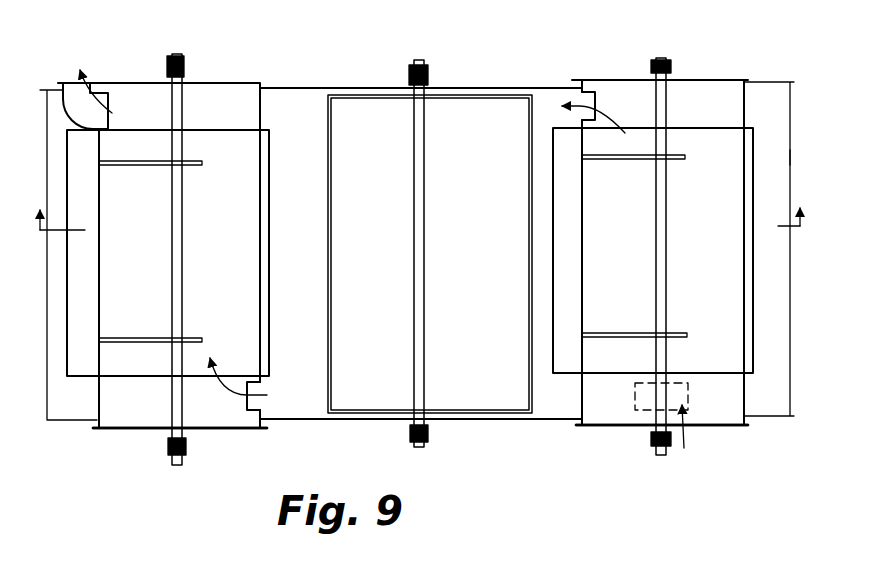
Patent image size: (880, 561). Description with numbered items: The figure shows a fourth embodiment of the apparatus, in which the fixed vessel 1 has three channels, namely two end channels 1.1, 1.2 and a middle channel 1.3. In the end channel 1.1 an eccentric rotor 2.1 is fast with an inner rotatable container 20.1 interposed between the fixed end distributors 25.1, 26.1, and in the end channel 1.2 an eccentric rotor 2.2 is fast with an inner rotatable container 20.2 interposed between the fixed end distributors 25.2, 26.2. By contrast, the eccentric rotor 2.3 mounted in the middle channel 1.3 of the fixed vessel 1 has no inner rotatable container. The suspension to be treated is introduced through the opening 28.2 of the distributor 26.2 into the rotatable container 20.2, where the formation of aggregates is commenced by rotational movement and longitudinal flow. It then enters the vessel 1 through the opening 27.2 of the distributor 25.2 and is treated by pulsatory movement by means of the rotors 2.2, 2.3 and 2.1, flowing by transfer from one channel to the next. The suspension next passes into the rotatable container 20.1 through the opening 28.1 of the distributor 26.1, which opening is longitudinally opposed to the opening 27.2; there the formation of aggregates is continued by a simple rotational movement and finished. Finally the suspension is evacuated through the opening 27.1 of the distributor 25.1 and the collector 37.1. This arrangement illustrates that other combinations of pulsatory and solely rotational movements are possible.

The fixed vessel 1 is at (783, 158).
The end channel 1.1 is at (73, 412).
The end channel 1.2 is at (760, 407).
The middle channel 1.3 is at (545, 412).
The eccentric rotor 2.1 is at (68, 192).
The eccentric rotor 2.2 is at (752, 144).
The eccentric rotor 2.3 is at (326, 112).
The inner rotatable container 20.1 is at (99, 263).
The inner rotatable container 20.2 is at (583, 252).
The fixed end distributor 25.1 is at (259, 100).
The fixed end distributor 25.2 is at (743, 102).
The fixed end distributor 26.1 is at (102, 408).
The fixed end distributor 26.2 is at (590, 407).
The opening 27.1 is at (137, 143).
The opening 27.2 is at (598, 93).
The opening 28.1 is at (247, 400).
The opening 28.2 is at (640, 410).
The collector 37.1 is at (53, 92).